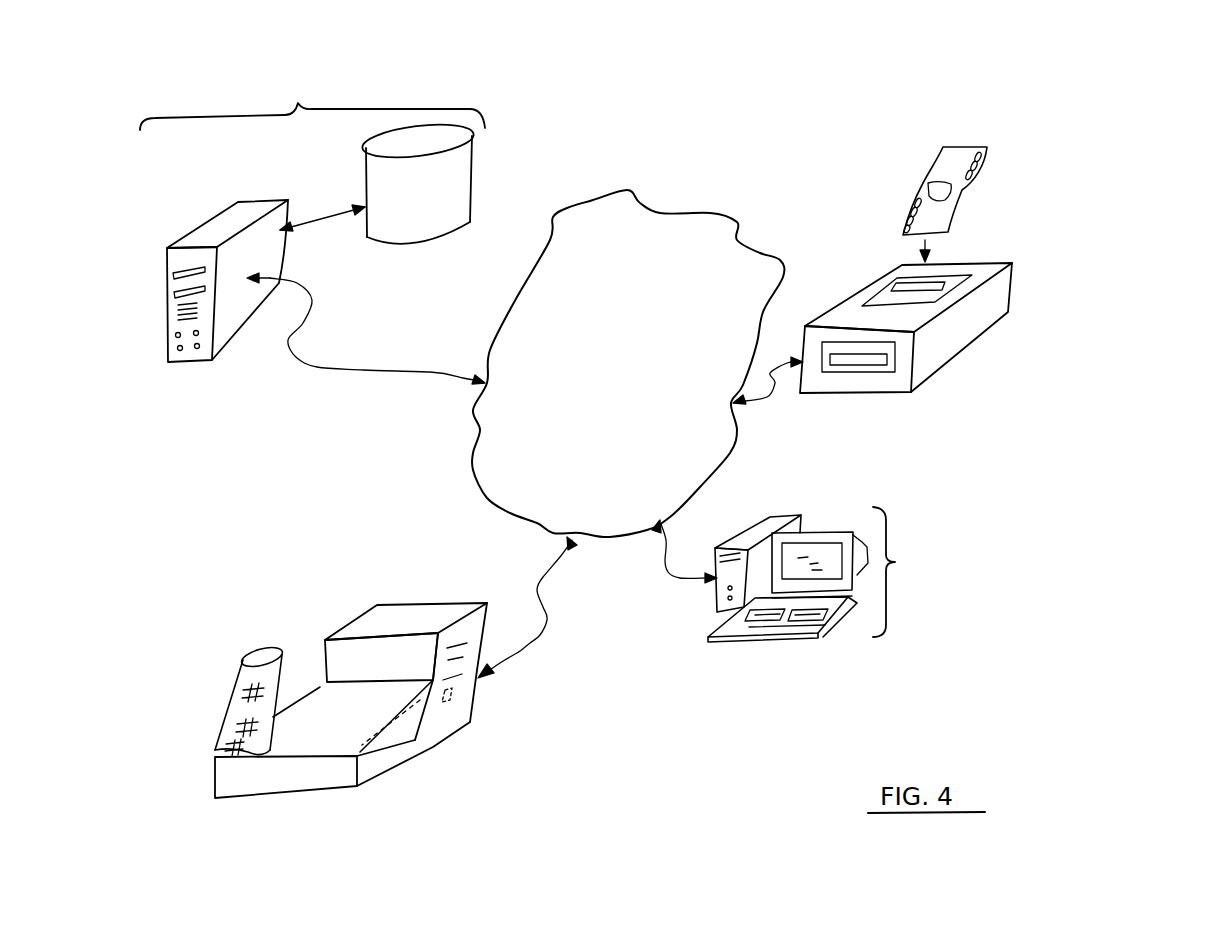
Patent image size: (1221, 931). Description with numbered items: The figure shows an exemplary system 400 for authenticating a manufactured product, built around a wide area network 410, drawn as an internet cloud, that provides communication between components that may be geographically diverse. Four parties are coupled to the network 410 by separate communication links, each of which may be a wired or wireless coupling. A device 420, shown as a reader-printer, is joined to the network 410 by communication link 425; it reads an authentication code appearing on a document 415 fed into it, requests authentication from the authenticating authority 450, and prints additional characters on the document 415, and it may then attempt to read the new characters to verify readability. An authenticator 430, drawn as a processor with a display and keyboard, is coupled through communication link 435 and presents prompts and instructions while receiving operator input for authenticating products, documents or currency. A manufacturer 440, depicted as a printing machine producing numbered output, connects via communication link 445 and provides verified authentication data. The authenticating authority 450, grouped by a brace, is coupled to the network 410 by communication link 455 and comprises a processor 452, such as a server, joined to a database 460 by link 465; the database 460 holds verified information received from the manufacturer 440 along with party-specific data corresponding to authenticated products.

The system 400 is at (823, 98).
The network 410 is at (725, 455).
The document 415 is at (960, 190).
The device 420 is at (945, 367).
The communication link 425 is at (767, 400).
The authenticator 430 is at (833, 596).
The communication link 435 is at (665, 575).
The manufacturer 440 is at (470, 722).
The communication link 445 is at (545, 622).
The authenticating authority 450 is at (341, 82).
The processor 452 is at (227, 347).
The communication link 455 is at (352, 372).
The database 460 is at (433, 240).
The link 465 is at (320, 223).